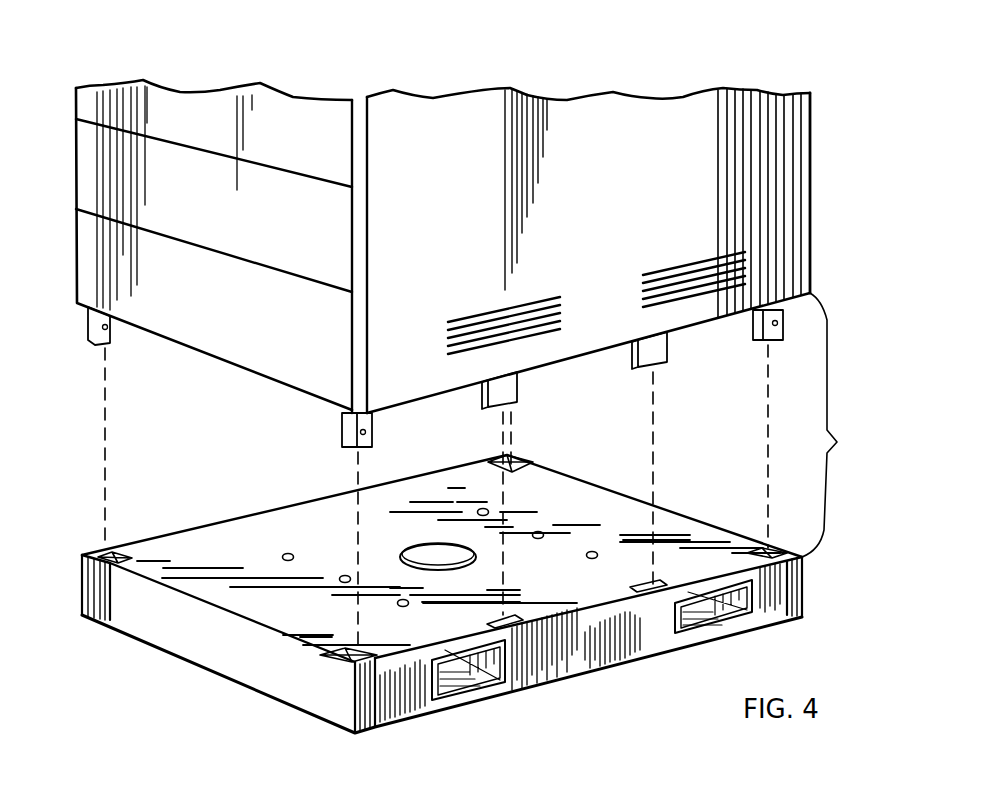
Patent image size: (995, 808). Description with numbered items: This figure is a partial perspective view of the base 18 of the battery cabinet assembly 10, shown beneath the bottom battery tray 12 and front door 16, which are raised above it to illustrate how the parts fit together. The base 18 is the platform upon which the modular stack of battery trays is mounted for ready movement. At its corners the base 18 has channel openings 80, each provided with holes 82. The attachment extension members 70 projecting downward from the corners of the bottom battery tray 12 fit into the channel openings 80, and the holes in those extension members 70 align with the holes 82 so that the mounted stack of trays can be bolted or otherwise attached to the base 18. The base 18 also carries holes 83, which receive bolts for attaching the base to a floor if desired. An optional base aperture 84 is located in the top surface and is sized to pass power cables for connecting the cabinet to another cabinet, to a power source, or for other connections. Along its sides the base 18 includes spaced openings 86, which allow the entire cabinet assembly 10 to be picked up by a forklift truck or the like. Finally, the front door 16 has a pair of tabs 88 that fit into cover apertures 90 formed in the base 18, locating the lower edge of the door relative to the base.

The battery cabinet assembly 10 is at (785, 68).
The battery tray module 12 is at (163, 257).
The front door 16 is at (672, 118).
The base 18 is at (175, 636).
The attachment extension 70 is at (108, 342).
The channel openings 80 is at (118, 555).
The holes 82 is at (352, 690).
The holes 83 is at (400, 600).
The base aperture 84 is at (433, 558).
The spaced openings 86 is at (490, 678).
The tabs 88 is at (632, 348).
The cover apertures 90 is at (640, 585).